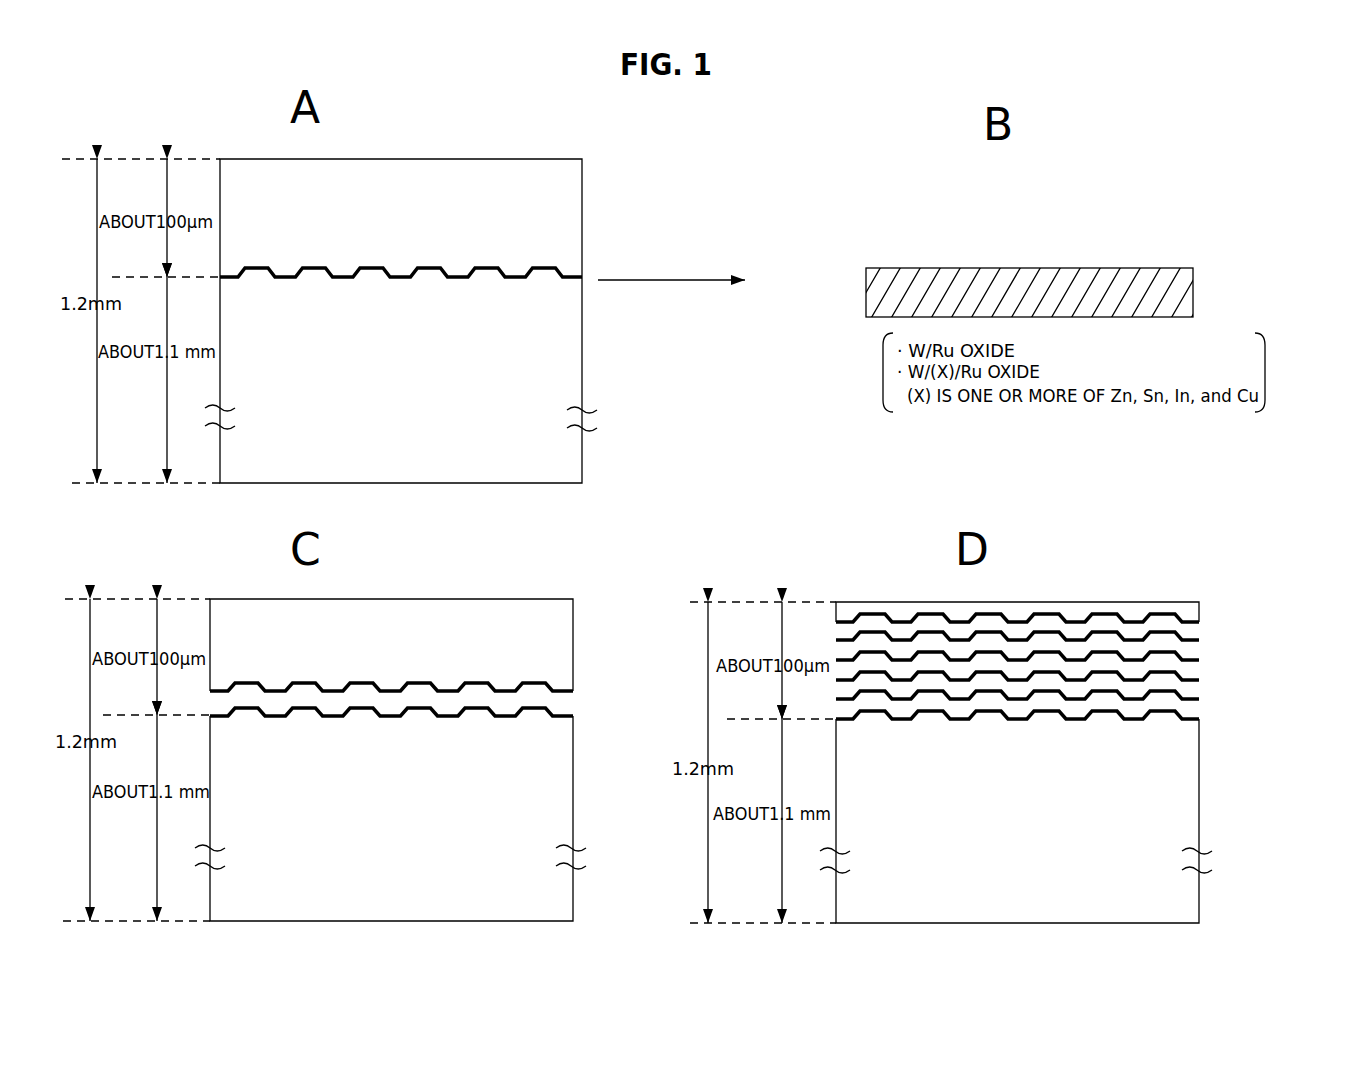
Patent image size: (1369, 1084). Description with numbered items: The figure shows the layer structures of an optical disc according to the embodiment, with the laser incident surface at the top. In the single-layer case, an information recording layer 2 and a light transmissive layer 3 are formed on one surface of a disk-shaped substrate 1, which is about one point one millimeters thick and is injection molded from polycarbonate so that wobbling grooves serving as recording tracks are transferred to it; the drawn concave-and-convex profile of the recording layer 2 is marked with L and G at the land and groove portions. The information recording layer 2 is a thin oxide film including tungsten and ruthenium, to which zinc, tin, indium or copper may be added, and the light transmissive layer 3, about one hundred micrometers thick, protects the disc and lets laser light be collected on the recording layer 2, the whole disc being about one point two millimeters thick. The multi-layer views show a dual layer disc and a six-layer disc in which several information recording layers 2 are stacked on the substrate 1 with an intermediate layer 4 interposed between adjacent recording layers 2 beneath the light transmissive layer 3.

In FIG. 1A, the substrate 1 is at (562, 451).
In FIG. 1C, the substrate 1 is at (552, 797).
In FIG. 1D, the substrate 1 is at (1182, 827).
In FIG. 1A, the information recording layer 2 is at (582, 277).
In FIG. 1B, the information recording layer 2 is at (956, 240).
In FIG. 1C, the information recording layer 2 is at (560, 690).
In FIG. 1D, the information recording layer 2 is at (1176, 620).
In FIG. 1A, the light transmissive layer 3 is at (568, 204).
In FIG. 1C, the light transmissive layer 3 is at (562, 617).
In FIG. 1D, the light transmissive layer 3 is at (1140, 612).
In FIG. 1C, the intermediate layer 4 is at (565, 703).
In FIG. 1D, the intermediate layer 4 is at (1187, 630).
In FIG. 1A, the land L is at (257, 268).
In FIG. 1A, the groove G is at (290, 277).